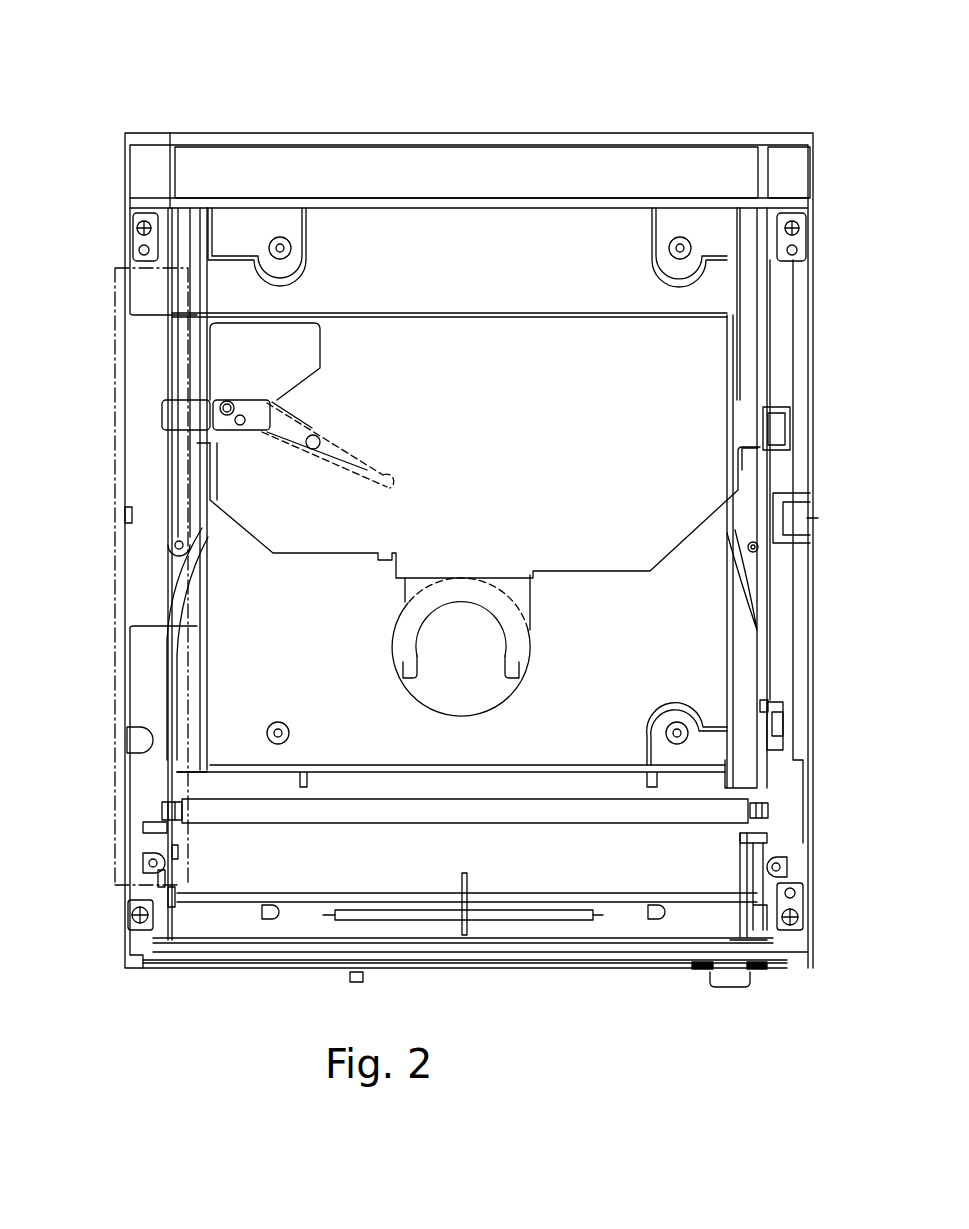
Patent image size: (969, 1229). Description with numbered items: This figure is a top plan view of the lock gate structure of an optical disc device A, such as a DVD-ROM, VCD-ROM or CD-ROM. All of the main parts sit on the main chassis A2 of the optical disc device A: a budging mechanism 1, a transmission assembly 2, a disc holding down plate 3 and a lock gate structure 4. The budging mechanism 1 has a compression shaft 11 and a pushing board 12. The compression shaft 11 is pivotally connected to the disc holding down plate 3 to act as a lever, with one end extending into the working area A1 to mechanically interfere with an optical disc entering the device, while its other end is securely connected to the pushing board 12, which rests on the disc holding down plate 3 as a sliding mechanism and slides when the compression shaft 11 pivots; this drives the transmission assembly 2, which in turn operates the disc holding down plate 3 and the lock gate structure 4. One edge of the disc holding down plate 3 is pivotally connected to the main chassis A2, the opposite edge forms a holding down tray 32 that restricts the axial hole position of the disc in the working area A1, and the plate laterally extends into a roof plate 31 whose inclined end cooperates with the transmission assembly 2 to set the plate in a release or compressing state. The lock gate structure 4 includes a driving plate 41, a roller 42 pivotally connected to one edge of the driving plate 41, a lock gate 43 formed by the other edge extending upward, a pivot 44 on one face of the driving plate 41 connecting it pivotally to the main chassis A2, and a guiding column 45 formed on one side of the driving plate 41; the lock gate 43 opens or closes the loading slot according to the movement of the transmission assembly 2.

The budging mechanism 1 is at (393, 87).
The compression shaft 11 is at (363, 448).
The pushing board 12 is at (318, 350).
The transmission assembly 2 is at (112, 577).
The disc holding down plate 3 is at (672, 567).
The roof plate 31 is at (180, 437).
The holding down tray 32 is at (505, 708).
The lock gate structure 4 is at (475, 948).
The driving plate 41 is at (650, 852).
The roller 42 is at (600, 823).
The lock gate 43 is at (597, 943).
The pivot 44 is at (772, 842).
The guiding column 45 is at (765, 850).
The optical disc device A is at (558, 112).
The working area A1 is at (355, 658).
The main chassis A2 is at (810, 835).